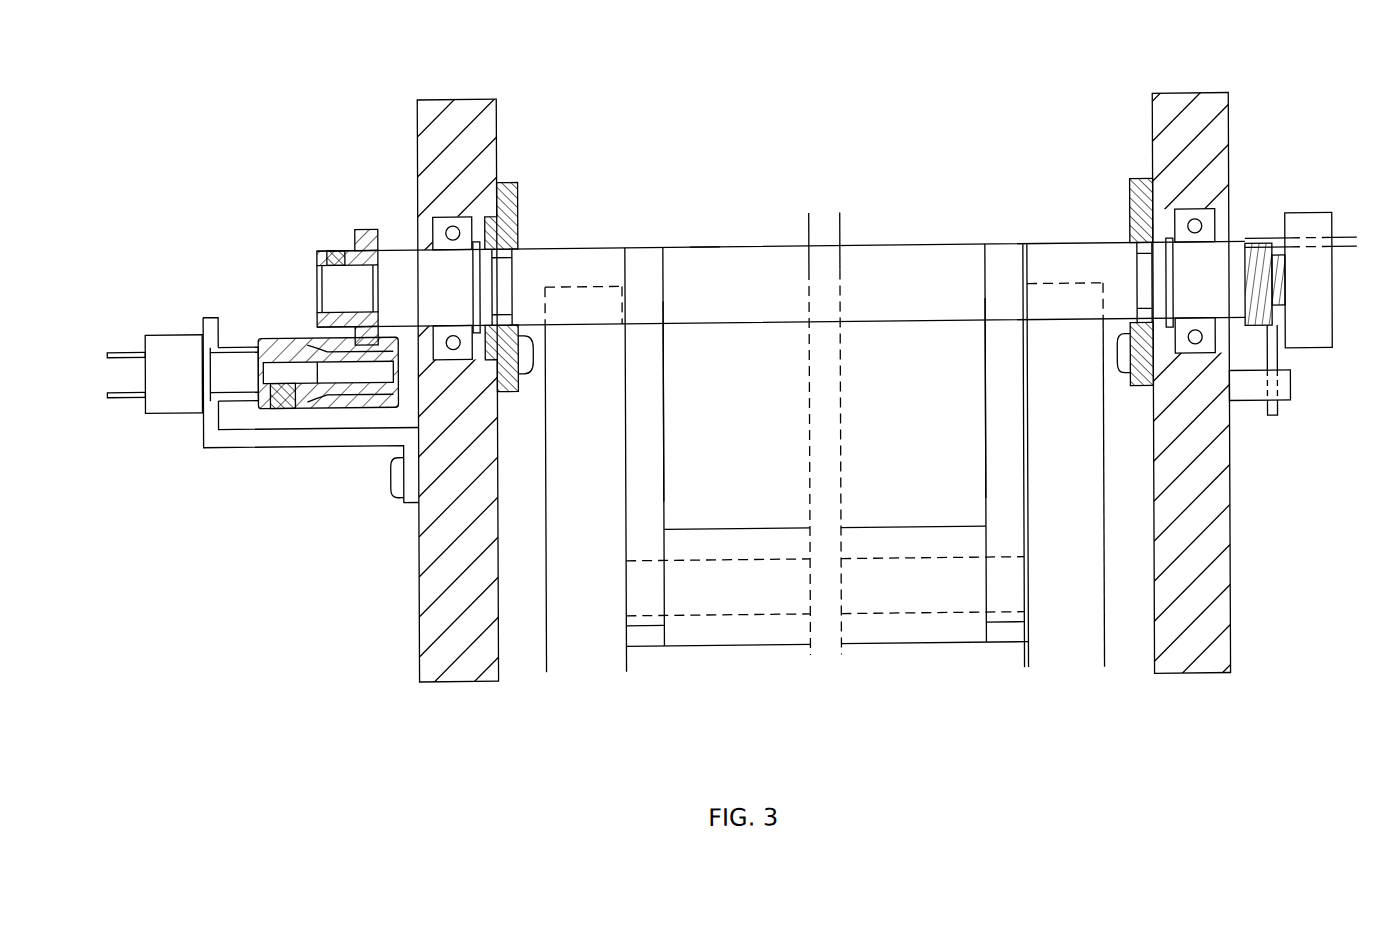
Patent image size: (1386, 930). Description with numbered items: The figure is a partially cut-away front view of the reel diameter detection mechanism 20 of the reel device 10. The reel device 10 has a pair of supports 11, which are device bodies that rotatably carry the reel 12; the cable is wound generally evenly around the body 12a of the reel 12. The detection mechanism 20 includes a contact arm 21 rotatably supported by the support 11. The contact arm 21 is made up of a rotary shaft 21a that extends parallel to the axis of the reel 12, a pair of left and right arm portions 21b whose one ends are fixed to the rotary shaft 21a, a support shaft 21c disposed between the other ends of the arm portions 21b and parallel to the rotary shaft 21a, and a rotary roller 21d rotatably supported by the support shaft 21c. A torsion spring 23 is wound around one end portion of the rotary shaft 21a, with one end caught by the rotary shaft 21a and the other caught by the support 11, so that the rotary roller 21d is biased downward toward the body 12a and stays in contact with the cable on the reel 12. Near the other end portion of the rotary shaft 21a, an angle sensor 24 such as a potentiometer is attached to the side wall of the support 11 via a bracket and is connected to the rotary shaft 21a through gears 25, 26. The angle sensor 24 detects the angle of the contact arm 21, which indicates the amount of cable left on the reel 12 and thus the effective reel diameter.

The reel device 10 is at (1242, 105).
The support 11 is at (437, 96).
The reel 12 is at (1099, 549).
The body of the reel 12a is at (917, 642).
The reel diameter detection mechanism 20 is at (908, 222).
The contact arm 21 is at (1042, 485).
The rotary shaft 21a is at (702, 246).
The arm portions 21b is at (663, 416).
The support shaft 21c is at (742, 617).
The rotary roller 21d is at (890, 634).
The torsion spring 23 is at (1258, 250).
The angle sensor 24 is at (172, 329).
The gear 25 is at (278, 333).
The gear 26 is at (350, 233).